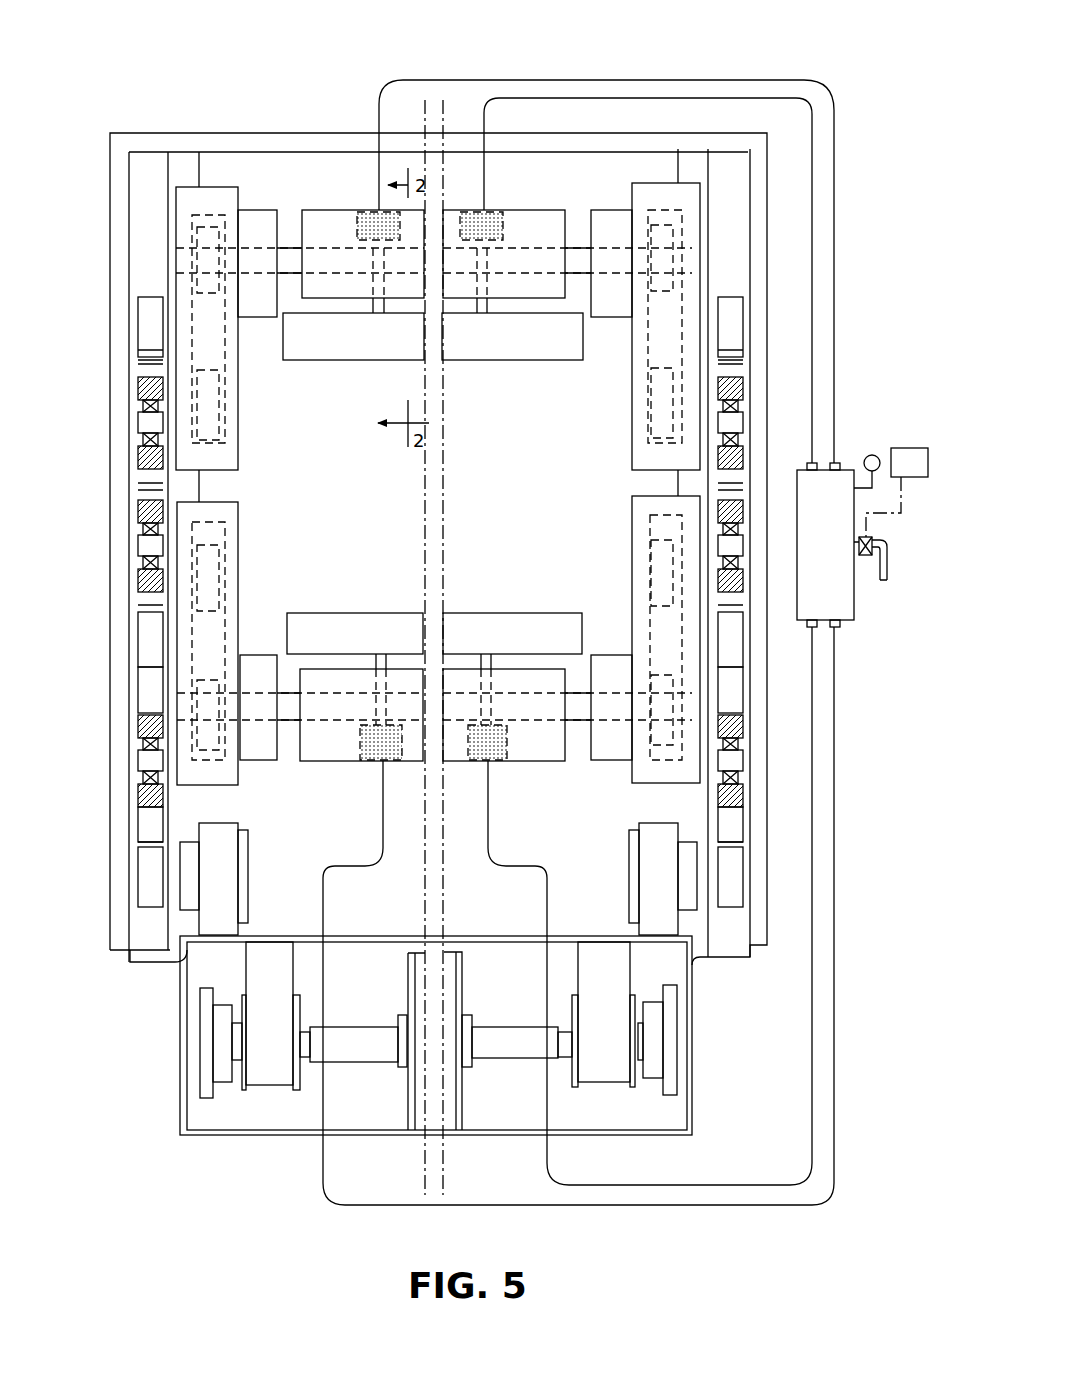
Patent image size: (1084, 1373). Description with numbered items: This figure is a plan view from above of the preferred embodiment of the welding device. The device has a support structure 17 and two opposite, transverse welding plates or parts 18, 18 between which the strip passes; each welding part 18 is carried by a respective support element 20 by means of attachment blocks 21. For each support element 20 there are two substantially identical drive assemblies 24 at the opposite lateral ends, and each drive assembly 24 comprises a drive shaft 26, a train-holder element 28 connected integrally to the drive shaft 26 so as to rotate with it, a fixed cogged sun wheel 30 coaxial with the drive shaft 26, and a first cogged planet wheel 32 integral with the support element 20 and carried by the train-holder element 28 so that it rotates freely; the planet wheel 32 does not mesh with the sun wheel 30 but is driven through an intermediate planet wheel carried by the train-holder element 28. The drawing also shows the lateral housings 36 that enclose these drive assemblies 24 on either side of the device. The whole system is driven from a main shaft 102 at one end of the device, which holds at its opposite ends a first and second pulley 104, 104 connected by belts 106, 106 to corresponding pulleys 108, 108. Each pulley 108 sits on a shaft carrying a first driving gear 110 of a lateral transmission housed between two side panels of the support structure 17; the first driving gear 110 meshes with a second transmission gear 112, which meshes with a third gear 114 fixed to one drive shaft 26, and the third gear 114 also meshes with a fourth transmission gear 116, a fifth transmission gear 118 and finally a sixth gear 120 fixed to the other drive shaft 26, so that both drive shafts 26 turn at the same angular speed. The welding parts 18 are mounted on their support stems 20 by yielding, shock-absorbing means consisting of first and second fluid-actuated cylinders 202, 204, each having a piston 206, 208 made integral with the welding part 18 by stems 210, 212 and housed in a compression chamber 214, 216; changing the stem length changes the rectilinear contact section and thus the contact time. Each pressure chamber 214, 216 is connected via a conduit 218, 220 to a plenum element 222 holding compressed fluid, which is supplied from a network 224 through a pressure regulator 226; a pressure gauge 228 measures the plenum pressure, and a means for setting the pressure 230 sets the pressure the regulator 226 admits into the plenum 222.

The support structure 17 is at (122, 140).
The welding plate 18 is at (553, 342).
The support element 20 is at (572, 240).
The attachment block 21 is at (313, 222).
The drive assembly 24 is at (168, 260).
The drive shaft 26 is at (185, 290).
The train-holder element 28 is at (225, 200).
The fixed cogged sun wheel 30 is at (195, 350).
The first cogged planet wheel 32 is at (200, 215).
The bearing housing 36 is at (185, 203).
The main shaft 102 is at (368, 1047).
The pulley 104 is at (247, 1085).
The belt 106 is at (258, 967).
The pulley 108 is at (246, 832).
The first driving gear 110 is at (140, 890).
The second transmission gear 112 is at (140, 815).
The third gear 114 is at (145, 650).
The fourth transmission gear 116 is at (142, 592).
The fifth transmission gear 118 is at (145, 475).
The sixth gear 120 is at (145, 312).
The first cylinder 202 is at (323, 194).
The second cylinder 204 is at (492, 208).
The piston 206 is at (378, 222).
The piston 208 is at (508, 230).
The stem 210 is at (378, 315).
The stem 212 is at (484, 315).
The compression chamber 214 is at (366, 222).
The compression chamber 216 is at (463, 218).
The conduit 218 is at (482, 80).
The conduit 220 is at (652, 97).
The plenum element 222 is at (850, 630).
The network 224 is at (886, 570).
The pressure regulator 226 is at (873, 540).
The pressure gauge 228 is at (871, 455).
The means for setting the pressure 230 is at (910, 448).